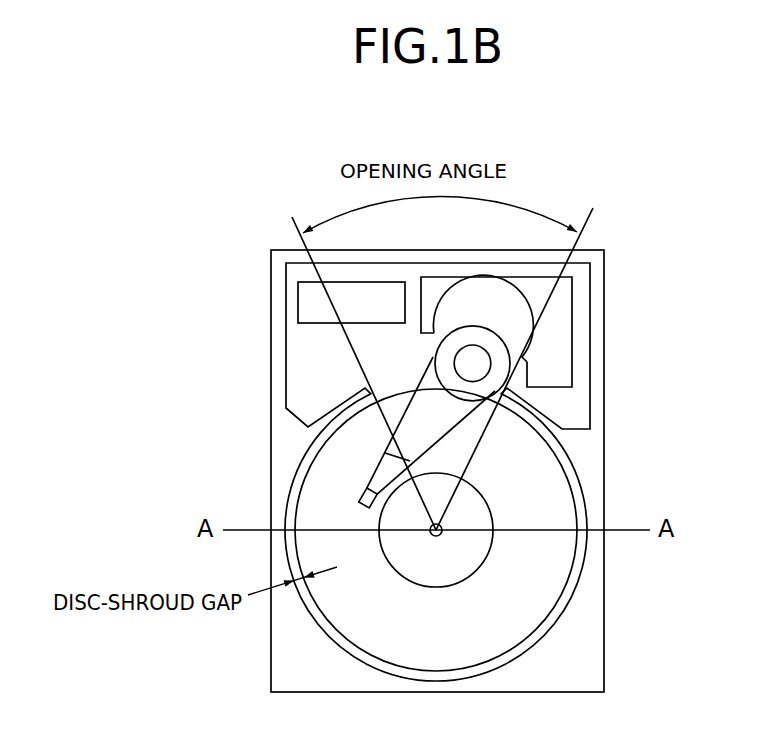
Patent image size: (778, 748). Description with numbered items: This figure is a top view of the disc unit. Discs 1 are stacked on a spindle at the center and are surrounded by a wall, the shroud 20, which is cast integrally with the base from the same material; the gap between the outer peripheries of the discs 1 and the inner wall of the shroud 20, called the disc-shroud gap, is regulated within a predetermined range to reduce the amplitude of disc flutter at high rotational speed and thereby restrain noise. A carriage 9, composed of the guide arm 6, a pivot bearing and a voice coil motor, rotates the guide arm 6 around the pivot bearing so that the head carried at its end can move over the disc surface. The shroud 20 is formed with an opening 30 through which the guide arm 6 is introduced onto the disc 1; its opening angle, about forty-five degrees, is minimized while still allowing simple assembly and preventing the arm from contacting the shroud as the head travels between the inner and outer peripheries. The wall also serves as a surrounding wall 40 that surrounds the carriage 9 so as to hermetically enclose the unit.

The disc 1 is at (327, 497).
The guide arm 6 is at (417, 428).
The carriage 9 is at (495, 322).
The shroud 20 is at (343, 410).
The opening 30 is at (397, 388).
The surrounding wall 40 is at (271, 250).